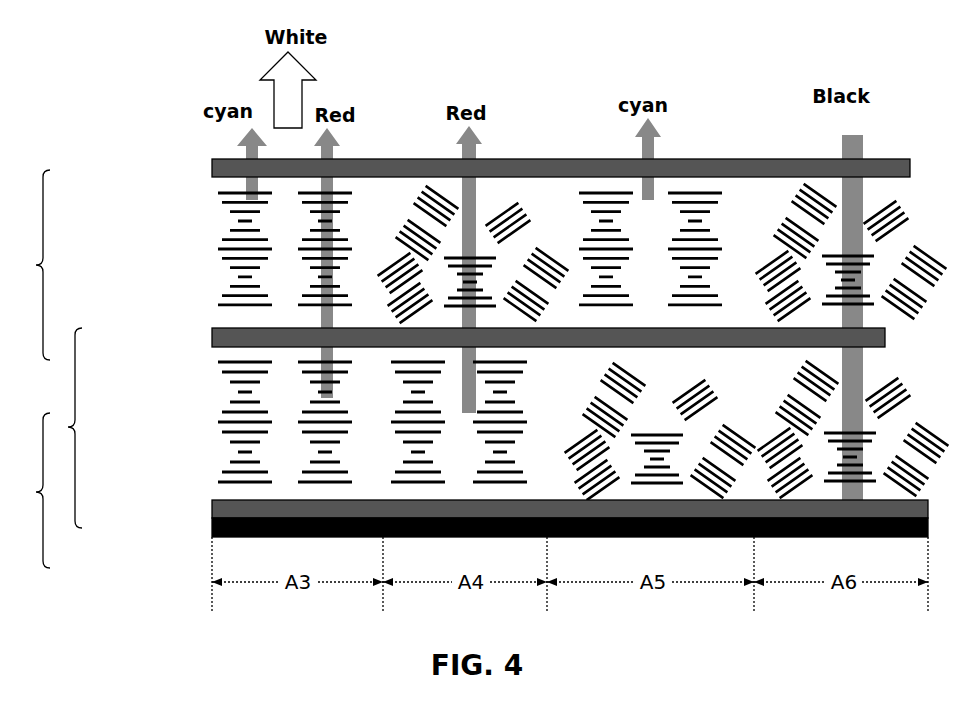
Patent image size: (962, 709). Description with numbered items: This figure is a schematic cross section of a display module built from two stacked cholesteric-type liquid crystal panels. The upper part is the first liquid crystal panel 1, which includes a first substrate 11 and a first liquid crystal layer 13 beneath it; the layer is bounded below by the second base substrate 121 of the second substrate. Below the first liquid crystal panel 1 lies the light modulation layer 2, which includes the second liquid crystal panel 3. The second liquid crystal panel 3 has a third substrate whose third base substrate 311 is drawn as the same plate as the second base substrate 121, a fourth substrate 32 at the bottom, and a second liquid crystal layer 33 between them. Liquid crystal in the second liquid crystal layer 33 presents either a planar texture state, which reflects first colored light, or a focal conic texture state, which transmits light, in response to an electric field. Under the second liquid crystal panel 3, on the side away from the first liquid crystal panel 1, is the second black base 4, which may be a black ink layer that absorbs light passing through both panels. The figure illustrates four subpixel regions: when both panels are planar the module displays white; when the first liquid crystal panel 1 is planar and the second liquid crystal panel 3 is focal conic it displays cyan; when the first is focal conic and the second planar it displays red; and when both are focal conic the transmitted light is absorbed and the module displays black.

The first liquid crystal panel 1 is at (480, 259).
The first substrate 11 is at (212, 163).
The first liquid crystal layer 13 is at (247, 268).
The second base substrate 121 is at (212, 337).
The third base substrate 311 is at (483, 352).
The light modulation layer 2 is at (481, 444).
The second liquid crystal panel 3 is at (497, 428).
The second liquid crystal layer 33 is at (230, 419).
The fourth substrate 32 is at (212, 510).
The second black base 4 is at (212, 533).